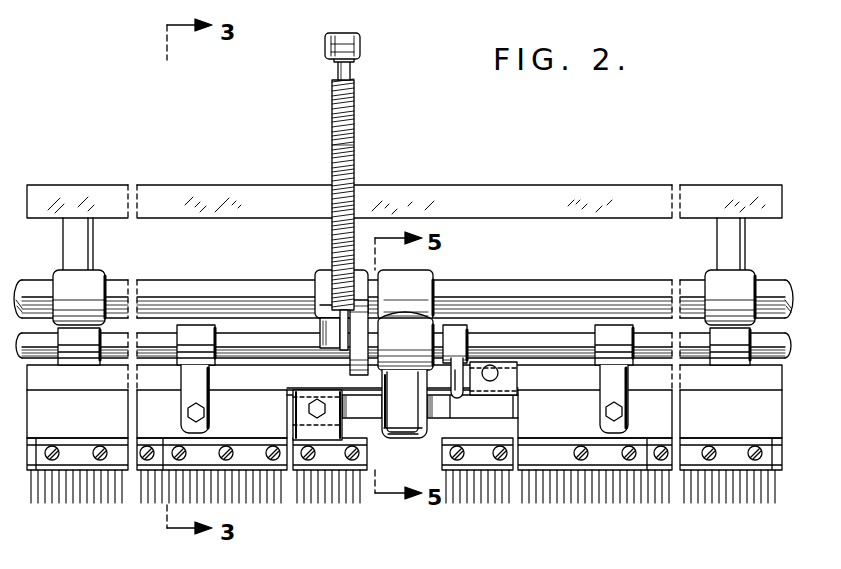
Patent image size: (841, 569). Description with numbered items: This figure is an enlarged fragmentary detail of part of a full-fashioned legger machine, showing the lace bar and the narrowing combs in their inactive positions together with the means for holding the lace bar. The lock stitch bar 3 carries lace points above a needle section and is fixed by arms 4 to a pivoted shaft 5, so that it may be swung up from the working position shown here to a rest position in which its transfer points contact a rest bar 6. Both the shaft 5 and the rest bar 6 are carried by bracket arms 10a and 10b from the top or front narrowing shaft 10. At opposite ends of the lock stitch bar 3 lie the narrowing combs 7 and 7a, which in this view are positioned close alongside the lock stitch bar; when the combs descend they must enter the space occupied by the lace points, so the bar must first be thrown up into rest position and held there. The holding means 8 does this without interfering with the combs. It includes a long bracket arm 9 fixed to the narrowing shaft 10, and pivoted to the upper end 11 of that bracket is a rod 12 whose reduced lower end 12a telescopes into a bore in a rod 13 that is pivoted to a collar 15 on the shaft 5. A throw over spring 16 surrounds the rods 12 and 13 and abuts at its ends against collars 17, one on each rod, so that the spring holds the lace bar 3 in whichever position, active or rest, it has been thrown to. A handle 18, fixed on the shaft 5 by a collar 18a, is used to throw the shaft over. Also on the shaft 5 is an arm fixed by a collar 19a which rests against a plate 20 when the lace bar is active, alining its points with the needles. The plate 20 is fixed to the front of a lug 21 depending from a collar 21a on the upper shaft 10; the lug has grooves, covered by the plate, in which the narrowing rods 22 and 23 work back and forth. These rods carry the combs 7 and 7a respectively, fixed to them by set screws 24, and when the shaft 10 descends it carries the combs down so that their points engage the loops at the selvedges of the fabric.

The lock stitch bar 3 is at (30, 450).
The arms 4 is at (188, 404).
The pivoted shaft 5 is at (537, 343).
The rest bar 6 is at (553, 190).
The narrowing comb 7 is at (335, 457).
The narrowing comb 7a is at (477, 457).
The holding means 8 is at (327, 191).
The bracket arm 9 is at (336, 68).
The front narrowing shaft 10 is at (648, 287).
The bracket arm 10a is at (93, 302).
The bracket arm 10b is at (82, 249).
The upper end of bracket 11 is at (360, 48).
The rod 12 is at (350, 74).
The reduced lower end of rod 12a is at (332, 150).
The rod 13 is at (350, 190).
The collar 15 is at (315, 310).
The throw over spring 16 is at (354, 134).
The collars 17 is at (338, 304).
The handle 18 is at (458, 382).
The collar 18a is at (462, 325).
The collar 19a is at (434, 320).
The plate 20 is at (420, 432).
The lug 21 is at (412, 418).
The collar 21a is at (422, 278).
The narrowing rod 22 is at (358, 401).
The narrowing rod 23 is at (560, 372).
The set screws 24 is at (317, 410).